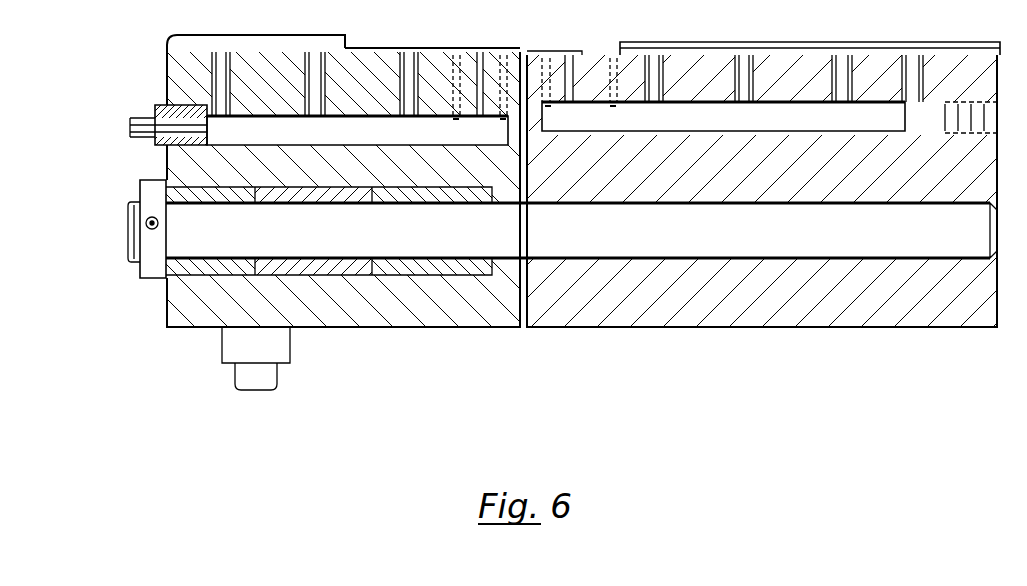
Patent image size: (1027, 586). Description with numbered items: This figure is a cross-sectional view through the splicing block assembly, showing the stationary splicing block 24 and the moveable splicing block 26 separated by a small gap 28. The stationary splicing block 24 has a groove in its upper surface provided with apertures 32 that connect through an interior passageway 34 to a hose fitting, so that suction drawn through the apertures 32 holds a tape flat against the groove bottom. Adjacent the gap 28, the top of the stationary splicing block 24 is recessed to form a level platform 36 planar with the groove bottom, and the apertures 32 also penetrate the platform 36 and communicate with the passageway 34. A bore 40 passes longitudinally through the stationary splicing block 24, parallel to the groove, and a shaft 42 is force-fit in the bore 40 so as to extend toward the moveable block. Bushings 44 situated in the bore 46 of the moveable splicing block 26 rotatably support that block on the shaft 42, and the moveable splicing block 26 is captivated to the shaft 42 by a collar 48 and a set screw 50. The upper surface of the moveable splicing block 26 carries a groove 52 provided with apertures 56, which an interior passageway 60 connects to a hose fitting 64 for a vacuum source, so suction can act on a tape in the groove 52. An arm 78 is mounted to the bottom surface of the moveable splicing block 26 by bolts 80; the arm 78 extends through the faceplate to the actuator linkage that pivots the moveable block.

The stationary splicing block 24 is at (779, 42).
The moveable splicing block 26 is at (268, 37).
The gap 28 is at (524, 305).
The apertures 32 is at (910, 56).
The interior passageway 34 is at (771, 127).
The platform 36 is at (601, 55).
The bore 40 is at (912, 206).
The shaft 42 is at (542, 239).
The bushings 44 is at (426, 270).
The bore 46 is at (345, 268).
The collar 48 is at (140, 262).
The set screw 50 is at (146, 221).
The groove 52 is at (335, 48).
The apertures 56 is at (481, 56).
The interior passageway 60 is at (369, 141).
The hose fitting 64 is at (152, 141).
The arm 78 is at (222, 346).
The bolts 80 is at (236, 372).